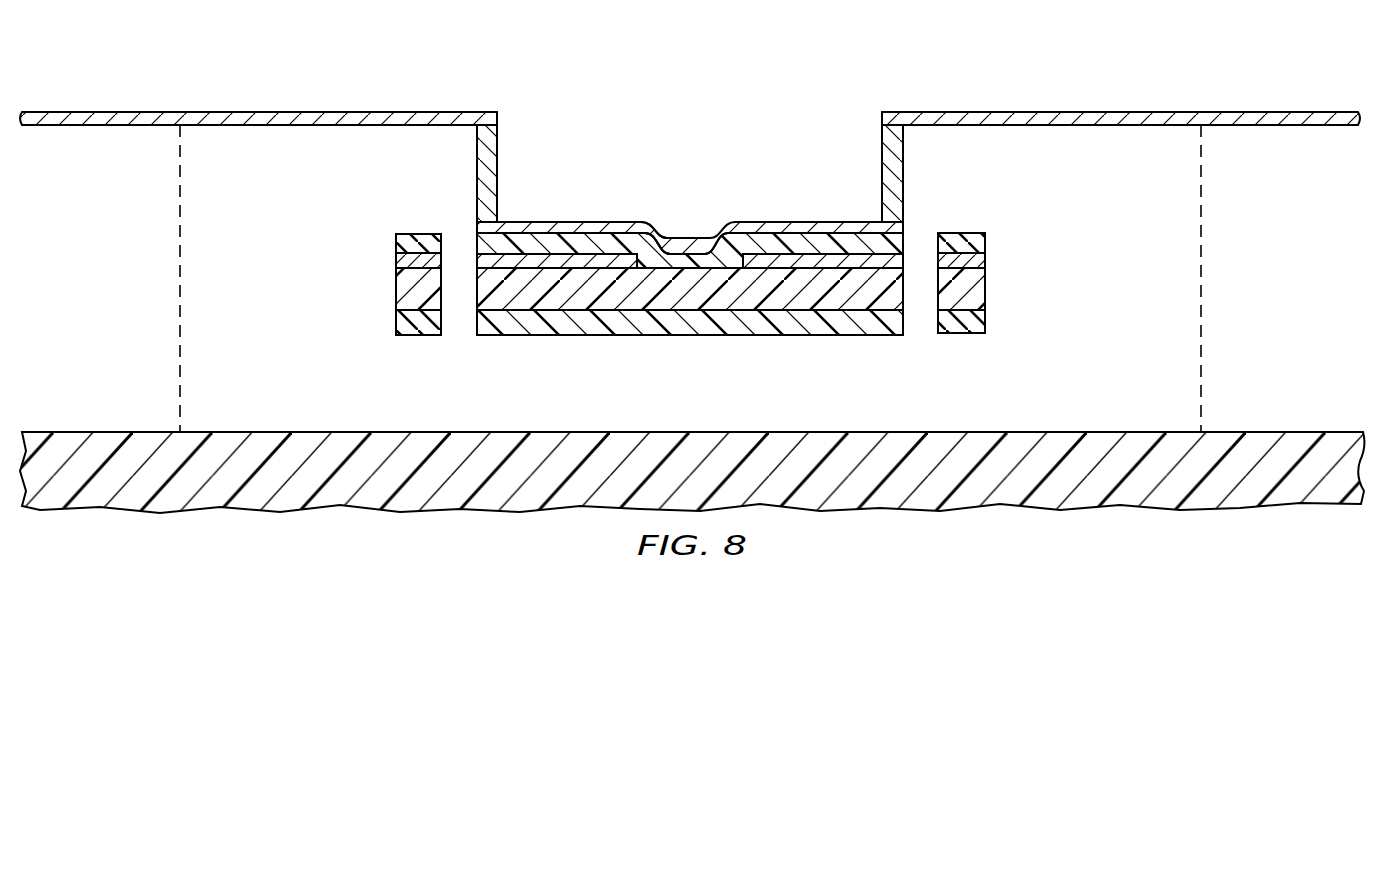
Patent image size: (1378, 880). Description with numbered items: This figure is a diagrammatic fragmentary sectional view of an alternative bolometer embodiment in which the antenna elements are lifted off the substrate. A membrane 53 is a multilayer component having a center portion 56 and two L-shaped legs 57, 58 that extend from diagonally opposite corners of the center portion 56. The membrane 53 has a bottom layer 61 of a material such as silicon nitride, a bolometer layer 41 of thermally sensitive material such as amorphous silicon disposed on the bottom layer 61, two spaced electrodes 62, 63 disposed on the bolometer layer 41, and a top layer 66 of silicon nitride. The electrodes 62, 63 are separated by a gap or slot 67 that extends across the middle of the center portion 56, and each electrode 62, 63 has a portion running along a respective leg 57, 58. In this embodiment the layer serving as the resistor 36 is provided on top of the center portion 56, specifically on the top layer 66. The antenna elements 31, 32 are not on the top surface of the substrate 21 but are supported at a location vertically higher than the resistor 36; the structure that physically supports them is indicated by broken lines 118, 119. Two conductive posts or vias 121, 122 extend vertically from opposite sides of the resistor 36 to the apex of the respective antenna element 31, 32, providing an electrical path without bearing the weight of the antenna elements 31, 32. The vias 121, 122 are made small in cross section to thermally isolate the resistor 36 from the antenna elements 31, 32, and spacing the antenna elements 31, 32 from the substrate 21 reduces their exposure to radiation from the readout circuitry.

The substrate 21 is at (1060, 440).
The antenna element 31 is at (263, 113).
The antenna element 32 is at (1120, 113).
The resistor 36 is at (598, 226).
The bolometer layer 41 is at (660, 300).
The membrane 53 is at (690, 241).
The center portion 56 is at (766, 210).
The L-shaped leg 57 is at (389, 255).
The L-shaped leg 58 is at (988, 247).
The bottom layer 61 is at (400, 323).
The electrode 62 is at (400, 262).
The electrode 63 is at (976, 258).
The top layer 66 is at (400, 245).
The gap or slot 67 is at (663, 238).
The broken line 118 is at (180, 322).
The broken line 119 is at (1201, 316).
The conductive post or via 121 is at (490, 165).
The conductive post or via 122 is at (888, 155).